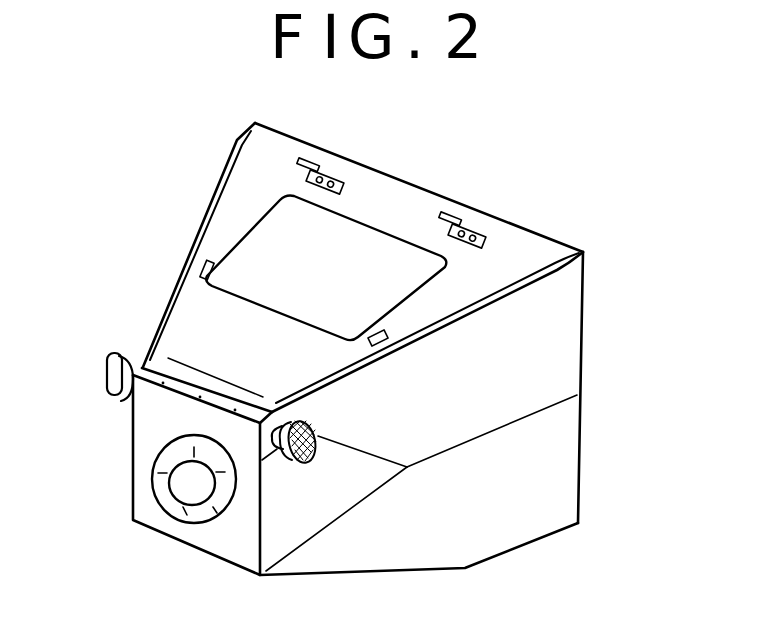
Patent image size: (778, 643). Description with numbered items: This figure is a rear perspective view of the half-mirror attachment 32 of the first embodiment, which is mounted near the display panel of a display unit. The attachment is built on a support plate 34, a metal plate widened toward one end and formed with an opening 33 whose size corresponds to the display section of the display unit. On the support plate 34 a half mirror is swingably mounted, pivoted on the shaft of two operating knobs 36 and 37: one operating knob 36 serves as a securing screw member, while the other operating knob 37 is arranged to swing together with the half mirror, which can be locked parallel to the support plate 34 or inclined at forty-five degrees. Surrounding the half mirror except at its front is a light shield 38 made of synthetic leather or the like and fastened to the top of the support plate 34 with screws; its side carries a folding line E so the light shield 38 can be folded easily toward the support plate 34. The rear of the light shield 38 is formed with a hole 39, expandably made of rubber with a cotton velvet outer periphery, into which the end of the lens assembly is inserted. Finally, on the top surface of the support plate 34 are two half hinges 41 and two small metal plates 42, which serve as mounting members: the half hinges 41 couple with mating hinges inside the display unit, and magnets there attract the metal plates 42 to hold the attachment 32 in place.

The half-mirror attachment 32 is at (619, 270).
The opening 33 is at (353, 218).
The support plate 34 is at (535, 248).
The operating knob 36 is at (297, 420).
The operating knob 37 is at (107, 373).
The light shield 38 is at (560, 365).
The hole 39 is at (178, 489).
The half hinge 41 is at (341, 180).
The small metal plate 42 is at (197, 258).
The folding line E is at (465, 443).